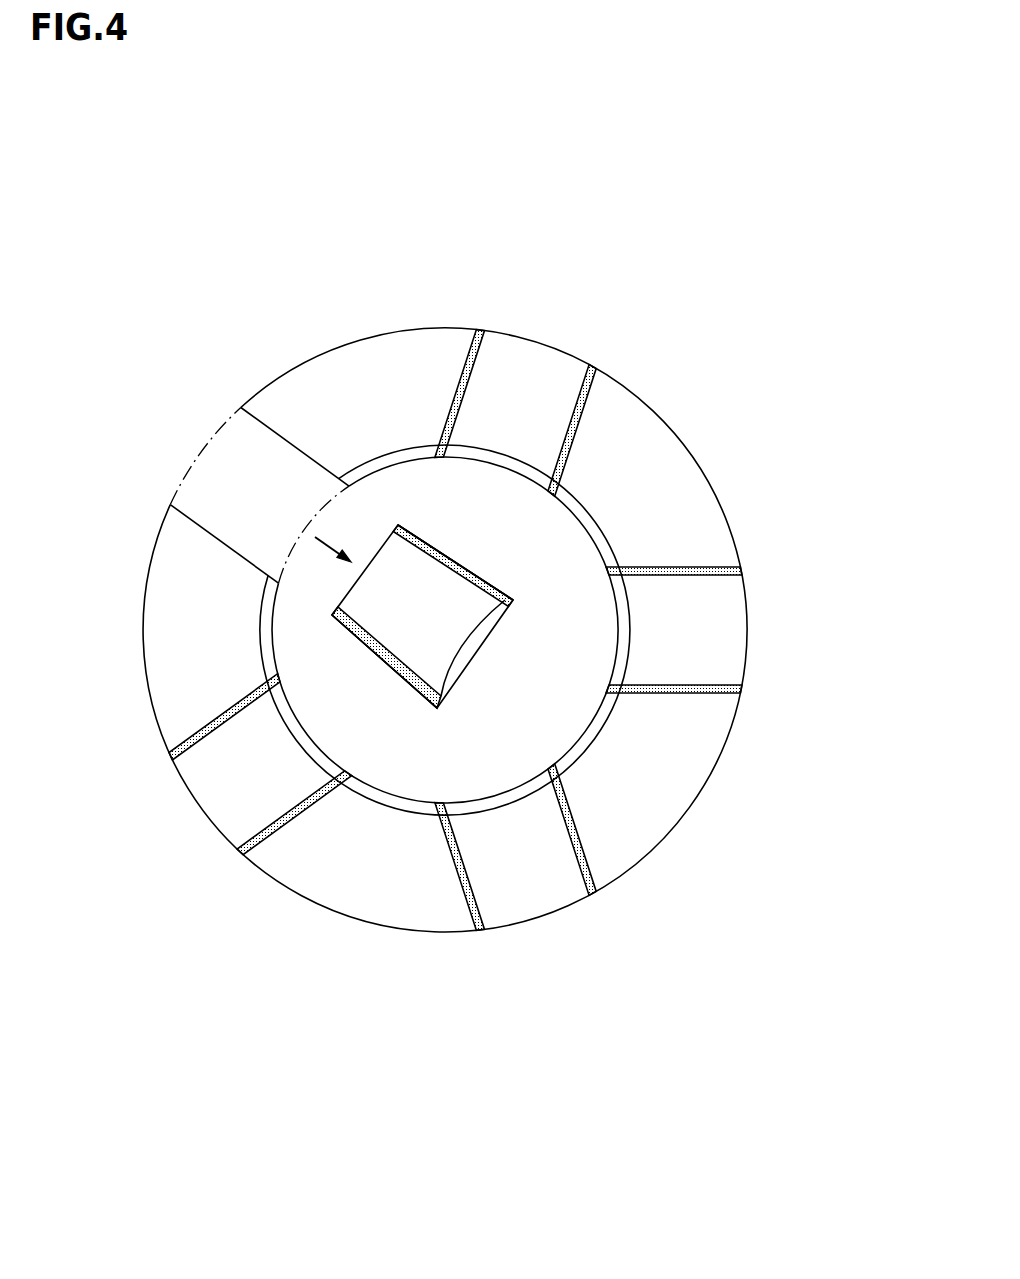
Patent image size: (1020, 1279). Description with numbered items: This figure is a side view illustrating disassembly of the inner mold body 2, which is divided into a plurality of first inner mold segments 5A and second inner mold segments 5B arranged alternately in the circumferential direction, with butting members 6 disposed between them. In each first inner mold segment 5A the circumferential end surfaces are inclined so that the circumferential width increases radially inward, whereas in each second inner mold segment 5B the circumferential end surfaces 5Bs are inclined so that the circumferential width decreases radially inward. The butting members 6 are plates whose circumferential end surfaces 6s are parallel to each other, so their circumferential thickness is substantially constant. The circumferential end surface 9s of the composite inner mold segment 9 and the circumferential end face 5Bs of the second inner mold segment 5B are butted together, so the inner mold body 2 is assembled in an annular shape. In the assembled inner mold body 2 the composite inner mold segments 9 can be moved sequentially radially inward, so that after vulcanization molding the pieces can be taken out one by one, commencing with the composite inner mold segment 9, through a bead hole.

The inner mold body 2 is at (440, 568).
The first inner mold segment 5A is at (422, 633).
The second inner mold segment 5B is at (367, 368).
The circumferential end surface of the second inner mold segment 5Bs is at (296, 450).
The butting member 6 is at (390, 666).
The circumferential end surface of the butting member 6s is at (448, 557).
The composite inner mold segment 9 is at (456, 699).
The circumferential end surface of the composite inner mold segment 9s is at (456, 646).